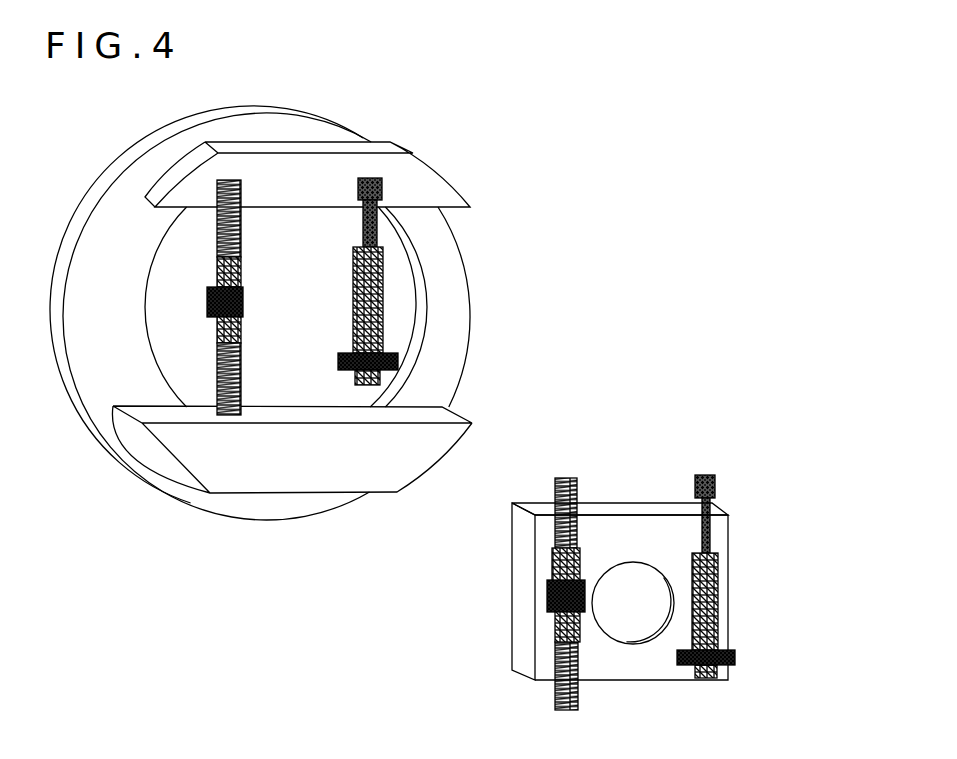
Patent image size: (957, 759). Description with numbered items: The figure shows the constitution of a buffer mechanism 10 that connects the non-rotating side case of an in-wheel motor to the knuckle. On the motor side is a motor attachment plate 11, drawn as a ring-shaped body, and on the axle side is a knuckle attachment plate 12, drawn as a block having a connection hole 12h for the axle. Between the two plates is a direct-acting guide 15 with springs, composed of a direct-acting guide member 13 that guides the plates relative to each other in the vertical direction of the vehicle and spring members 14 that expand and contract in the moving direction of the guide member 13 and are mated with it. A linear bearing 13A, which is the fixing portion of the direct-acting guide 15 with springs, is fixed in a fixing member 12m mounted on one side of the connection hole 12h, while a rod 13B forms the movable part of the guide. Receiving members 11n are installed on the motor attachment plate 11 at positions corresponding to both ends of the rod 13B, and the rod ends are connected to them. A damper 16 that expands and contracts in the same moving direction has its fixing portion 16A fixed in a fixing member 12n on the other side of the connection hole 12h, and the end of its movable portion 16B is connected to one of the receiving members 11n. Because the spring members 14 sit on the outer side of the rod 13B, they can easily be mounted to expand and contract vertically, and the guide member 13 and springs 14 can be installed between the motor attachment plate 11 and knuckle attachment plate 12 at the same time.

The buffer mechanism 10 is at (572, 343).
The motor attachment plate 11 is at (455, 272).
The receiving member 11n is at (418, 173).
The knuckle attachment plate 12 is at (533, 583).
The connection hole 12h is at (627, 583).
The fixing member 12m is at (585, 602).
The fixing member 12n is at (735, 650).
The direct-acting guide member 13 is at (555, 620).
The linear bearing 13A is at (555, 635).
The rod 13B is at (568, 478).
The spring member 14 is at (555, 520).
The direct-acting guide with springs 15 is at (240, 357).
The damper 16 is at (388, 318).
The fixing portion of the damper 16A is at (718, 583).
The movable portion of the damper 16B is at (708, 526).